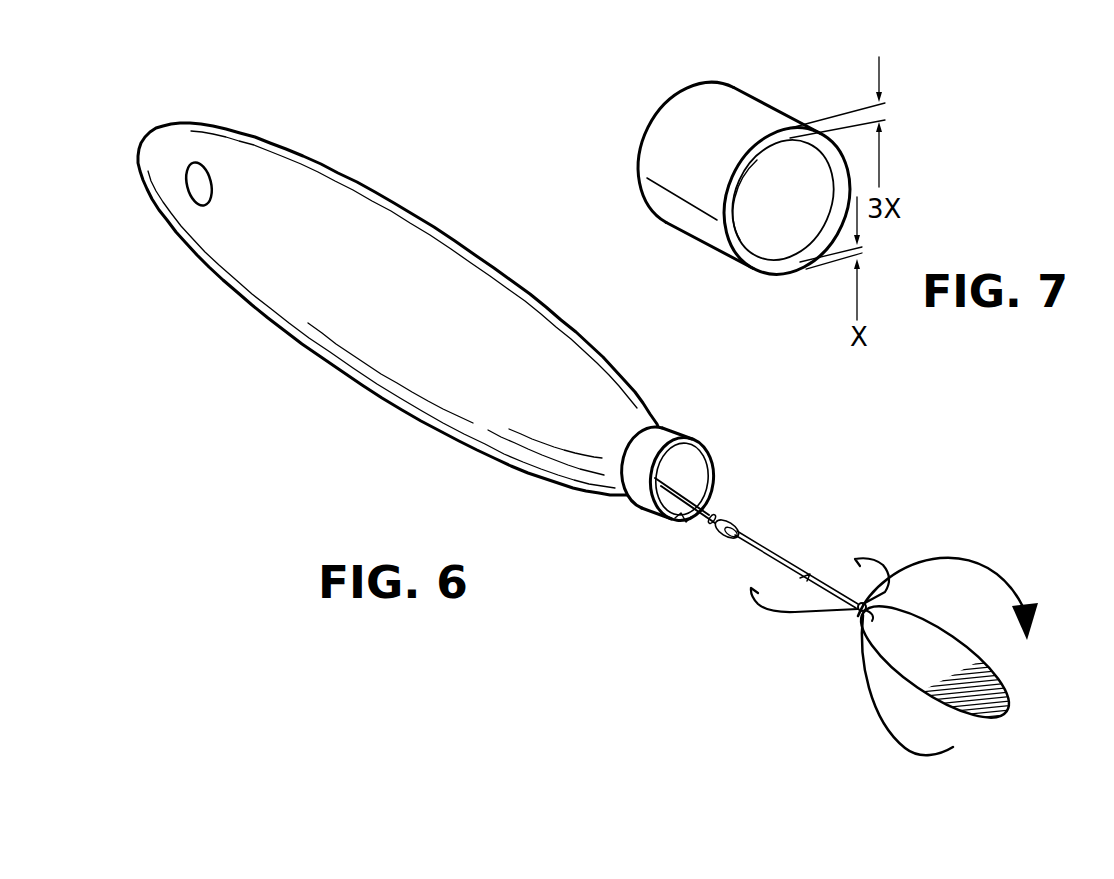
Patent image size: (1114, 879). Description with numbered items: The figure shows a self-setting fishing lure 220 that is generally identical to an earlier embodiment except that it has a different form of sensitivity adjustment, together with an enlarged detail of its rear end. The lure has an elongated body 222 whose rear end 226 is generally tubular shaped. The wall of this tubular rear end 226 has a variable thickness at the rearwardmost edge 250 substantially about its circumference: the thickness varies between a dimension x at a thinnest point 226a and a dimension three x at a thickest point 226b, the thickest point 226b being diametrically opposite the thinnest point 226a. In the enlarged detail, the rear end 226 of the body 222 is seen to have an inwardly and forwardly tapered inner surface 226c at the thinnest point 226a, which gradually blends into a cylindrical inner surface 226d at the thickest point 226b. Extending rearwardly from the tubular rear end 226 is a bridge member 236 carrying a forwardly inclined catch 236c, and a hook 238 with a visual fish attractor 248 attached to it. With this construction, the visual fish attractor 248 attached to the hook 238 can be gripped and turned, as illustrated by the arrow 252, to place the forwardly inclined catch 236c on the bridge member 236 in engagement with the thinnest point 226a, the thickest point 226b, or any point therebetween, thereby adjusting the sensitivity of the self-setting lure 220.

In FIG. 6, the fishing lure 220 is at (382, 141).
In FIG. 6, the body 222 is at (408, 245).
In FIG. 6, the rear end 226 is at (665, 447).
In FIG. 7, the thinnest point 226a is at (773, 277).
In FIG. 7, the thickest point 226b is at (788, 138).
In FIG. 7, the inwardly and forwardly tapered inner surface 226c is at (777, 260).
In FIG. 7, the cylindrical inner surface 226d is at (737, 228).
In FIG. 6, the bridge member 236 is at (724, 502).
In FIG. 6, the forwardly inclined catch 236c is at (676, 521).
In FIG. 6, the hook 238 is at (789, 547).
In FIG. 6, the visual fish attractor 248 is at (967, 665).
In FIG. 6, the rearwardmost edge 250 is at (687, 448).
In FIG. 6, the arrow 252 is at (975, 560).